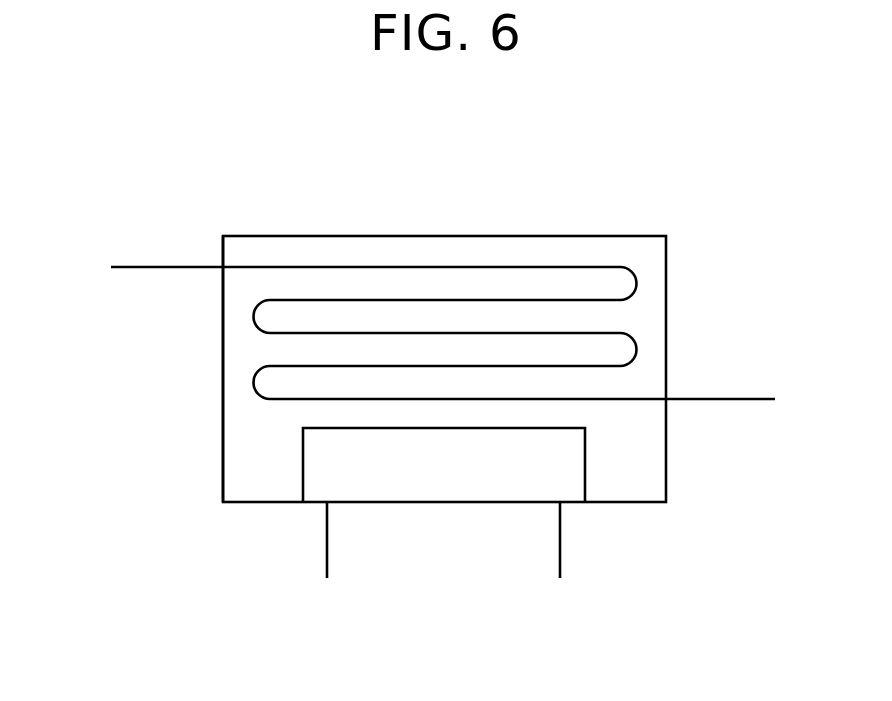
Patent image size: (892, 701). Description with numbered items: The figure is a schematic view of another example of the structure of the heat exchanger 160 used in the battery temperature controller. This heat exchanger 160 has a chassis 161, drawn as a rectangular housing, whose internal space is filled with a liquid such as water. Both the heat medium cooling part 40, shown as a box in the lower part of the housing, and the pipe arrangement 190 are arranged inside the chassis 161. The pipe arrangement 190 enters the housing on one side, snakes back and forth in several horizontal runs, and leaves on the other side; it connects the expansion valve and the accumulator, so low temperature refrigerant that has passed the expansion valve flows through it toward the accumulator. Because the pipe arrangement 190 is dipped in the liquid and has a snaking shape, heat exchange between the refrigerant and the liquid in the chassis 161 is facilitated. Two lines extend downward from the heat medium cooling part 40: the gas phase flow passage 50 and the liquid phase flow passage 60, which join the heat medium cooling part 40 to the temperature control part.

The heat exchanger 160 is at (617, 238).
The chassis 161 is at (222, 380).
The pipe arrangement 190 is at (449, 266).
The heat medium cooling part 40 is at (426, 470).
The gas phase flow passage 50 is at (327, 551).
The liquid phase flow passage 60 is at (561, 551).